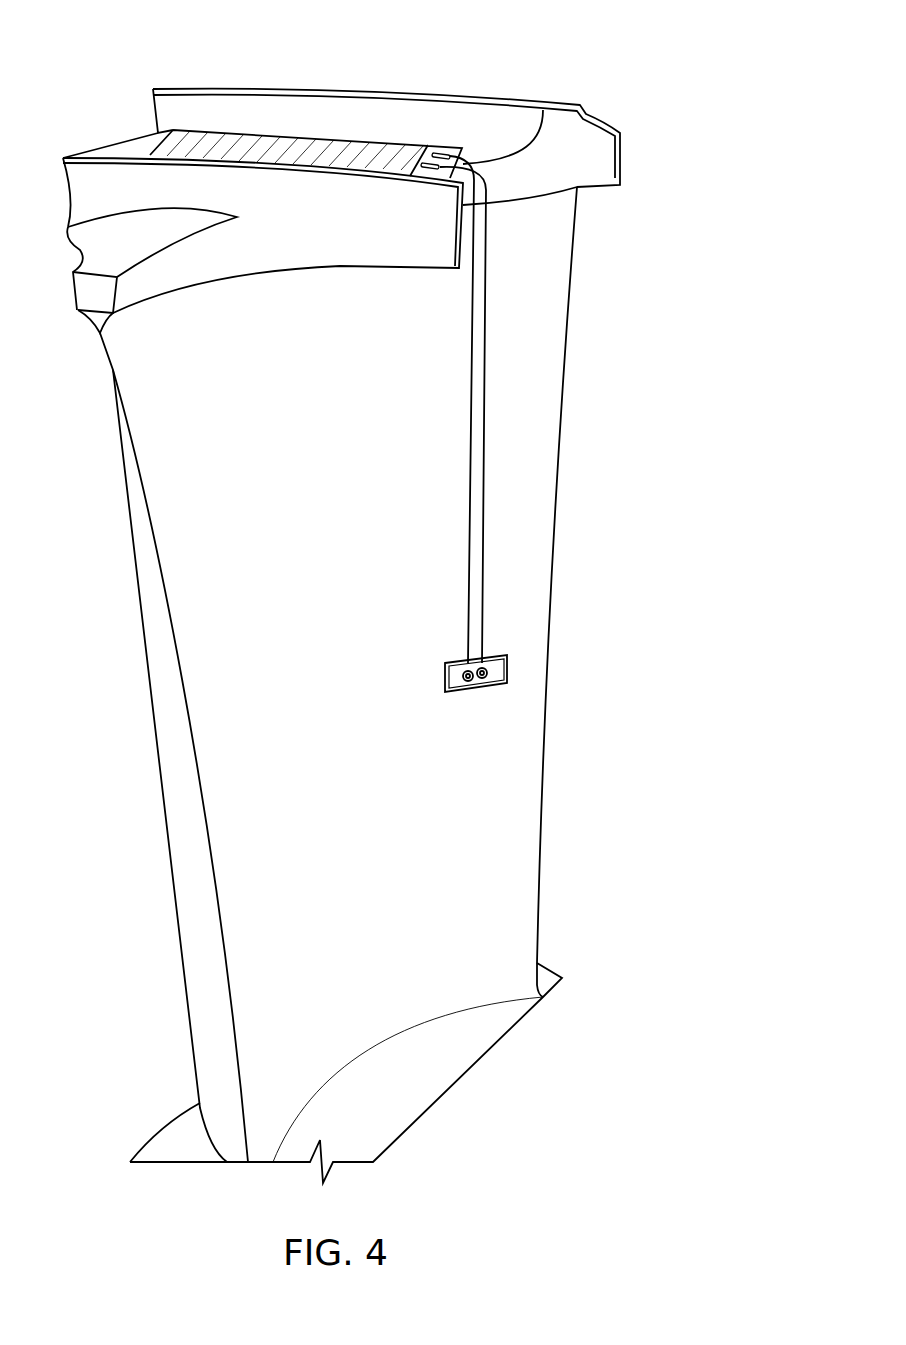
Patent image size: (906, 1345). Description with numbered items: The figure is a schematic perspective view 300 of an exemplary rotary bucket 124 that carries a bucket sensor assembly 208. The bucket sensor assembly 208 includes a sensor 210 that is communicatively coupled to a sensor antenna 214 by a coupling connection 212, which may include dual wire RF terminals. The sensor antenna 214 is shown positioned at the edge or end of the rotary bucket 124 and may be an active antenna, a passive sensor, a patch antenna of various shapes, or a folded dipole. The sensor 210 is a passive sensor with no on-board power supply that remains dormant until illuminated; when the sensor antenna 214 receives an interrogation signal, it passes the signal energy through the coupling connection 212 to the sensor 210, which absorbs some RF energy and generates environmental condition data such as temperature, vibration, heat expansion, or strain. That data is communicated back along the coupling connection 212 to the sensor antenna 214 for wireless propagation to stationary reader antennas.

The schematic perspective view 300 is at (170, 55).
The sensor antenna 214 is at (287, 155).
The coupling connection 212 is at (488, 437).
The sensor 210 is at (488, 673).
The bucket sensor assembly 208 is at (655, 95).
The rotary bucket 124 is at (438, 972).